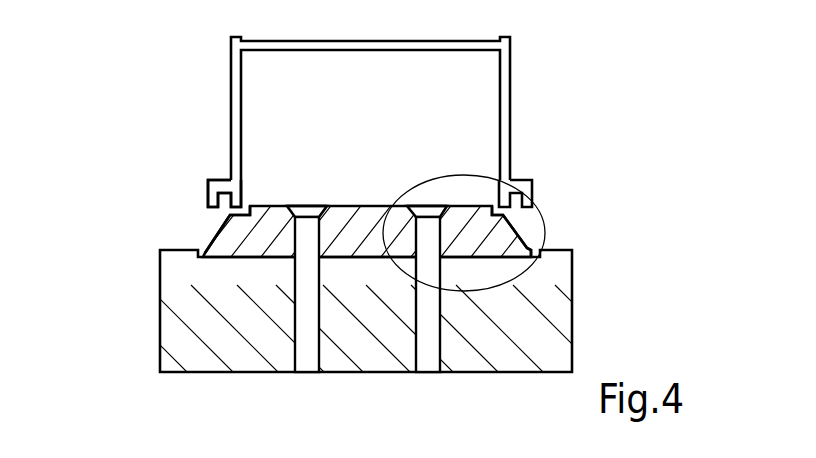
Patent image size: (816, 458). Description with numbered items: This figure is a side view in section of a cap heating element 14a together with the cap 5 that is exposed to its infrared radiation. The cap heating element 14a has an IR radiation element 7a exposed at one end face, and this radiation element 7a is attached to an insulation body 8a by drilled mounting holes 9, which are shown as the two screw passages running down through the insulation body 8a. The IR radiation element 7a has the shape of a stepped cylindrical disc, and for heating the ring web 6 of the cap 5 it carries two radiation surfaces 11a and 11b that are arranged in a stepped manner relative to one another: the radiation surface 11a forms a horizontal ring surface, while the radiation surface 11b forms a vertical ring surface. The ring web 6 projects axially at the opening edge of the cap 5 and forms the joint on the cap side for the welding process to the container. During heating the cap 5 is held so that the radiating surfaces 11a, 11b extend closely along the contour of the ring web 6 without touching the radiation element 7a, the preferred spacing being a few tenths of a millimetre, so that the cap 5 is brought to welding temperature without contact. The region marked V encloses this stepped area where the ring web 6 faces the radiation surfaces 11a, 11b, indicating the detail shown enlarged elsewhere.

The cap 5 is at (511, 92).
The ring web 6 is at (236, 200).
The IR radiation element 7a is at (255, 235).
The insulation body 8a is at (510, 345).
The drilled mounting holes 9 is at (430, 358).
The radiation surface 11a is at (530, 258).
The radiation surface 11b is at (253, 233).
The cap heating element 14a is at (571, 224).
The detail V is at (450, 176).